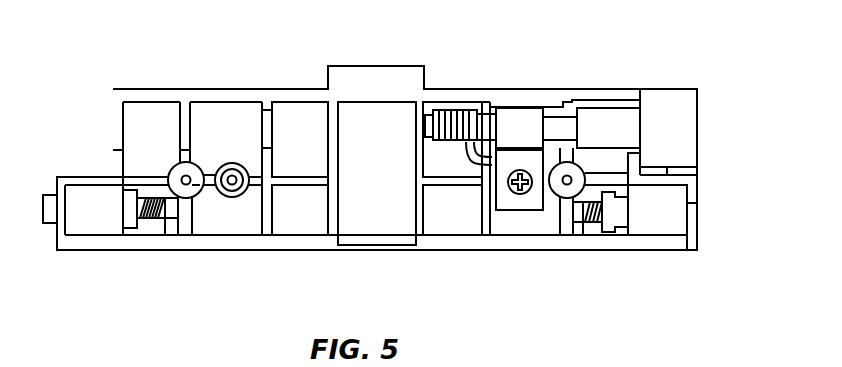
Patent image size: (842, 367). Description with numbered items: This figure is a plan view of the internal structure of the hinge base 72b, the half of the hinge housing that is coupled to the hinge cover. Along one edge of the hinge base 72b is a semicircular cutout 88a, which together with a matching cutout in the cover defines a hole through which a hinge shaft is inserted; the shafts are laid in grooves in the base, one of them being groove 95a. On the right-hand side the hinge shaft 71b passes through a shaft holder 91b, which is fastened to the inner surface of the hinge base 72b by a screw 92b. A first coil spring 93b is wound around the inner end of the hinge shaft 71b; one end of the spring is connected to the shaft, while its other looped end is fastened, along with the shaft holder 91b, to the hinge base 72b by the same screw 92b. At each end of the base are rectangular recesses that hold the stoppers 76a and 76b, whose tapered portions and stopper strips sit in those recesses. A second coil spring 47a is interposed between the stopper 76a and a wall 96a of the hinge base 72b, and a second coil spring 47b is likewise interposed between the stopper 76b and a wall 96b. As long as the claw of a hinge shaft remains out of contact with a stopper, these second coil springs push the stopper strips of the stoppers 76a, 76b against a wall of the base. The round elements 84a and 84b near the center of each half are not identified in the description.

The hinge base 72b is at (289, 88).
The semicircular cutout 88a is at (117, 120).
The groove 95a is at (193, 118).
The roller 84a is at (186, 178).
The stopper 76a is at (132, 223).
The second coil spring 47a is at (150, 222).
The wall 96a is at (182, 212).
The first coil spring 93b is at (443, 110).
The shaft holder 91b is at (513, 110).
The roller 84b is at (567, 177).
The hinge shaft 71b is at (610, 118).
The screw 92b is at (527, 194).
The wall 96b is at (568, 220).
The second coil spring 47b is at (596, 224).
The stopper 76b is at (613, 216).